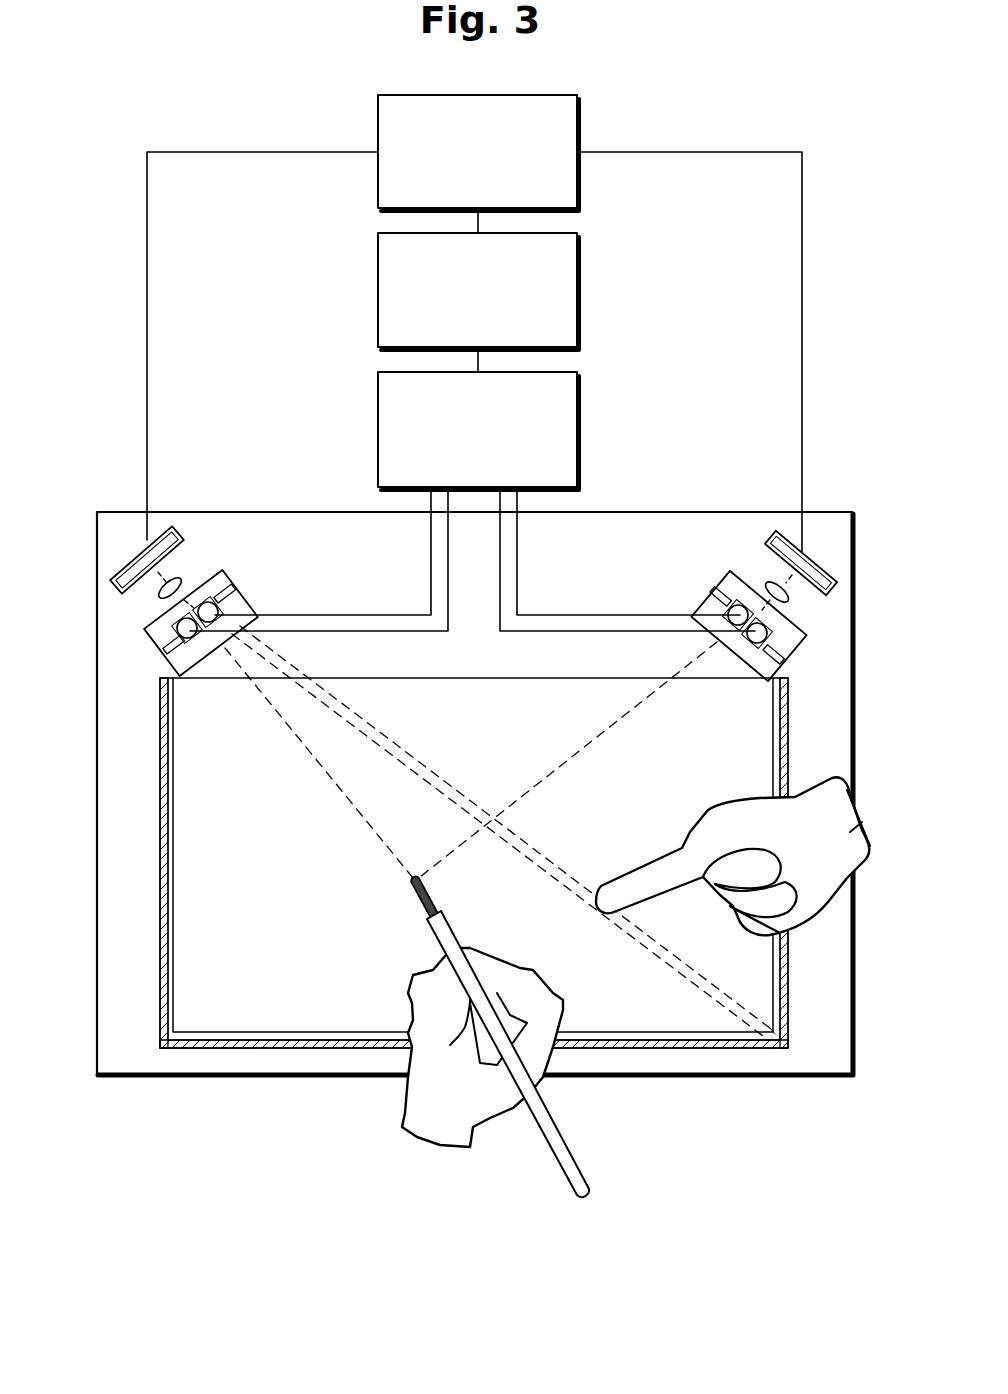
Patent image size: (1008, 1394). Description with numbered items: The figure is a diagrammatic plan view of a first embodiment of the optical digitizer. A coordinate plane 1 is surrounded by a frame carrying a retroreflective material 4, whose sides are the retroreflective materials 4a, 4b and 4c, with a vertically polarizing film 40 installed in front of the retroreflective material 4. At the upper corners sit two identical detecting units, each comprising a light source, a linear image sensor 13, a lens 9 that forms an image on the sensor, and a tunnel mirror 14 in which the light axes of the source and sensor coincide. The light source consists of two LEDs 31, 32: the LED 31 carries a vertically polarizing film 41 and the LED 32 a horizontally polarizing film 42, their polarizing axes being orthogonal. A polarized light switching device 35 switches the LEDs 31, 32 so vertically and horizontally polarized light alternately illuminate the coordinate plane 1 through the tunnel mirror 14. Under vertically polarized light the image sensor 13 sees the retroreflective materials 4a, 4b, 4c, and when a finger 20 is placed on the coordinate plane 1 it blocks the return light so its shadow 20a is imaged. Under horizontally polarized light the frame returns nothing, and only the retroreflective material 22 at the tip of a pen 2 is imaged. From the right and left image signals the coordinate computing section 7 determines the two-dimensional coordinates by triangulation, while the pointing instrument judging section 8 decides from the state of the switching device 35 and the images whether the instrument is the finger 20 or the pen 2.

The coordinate plane 1 is at (190, 982).
The pen 2 is at (560, 1170).
The retroreflective material 4 is at (712, 1048).
The retroreflective material 4a is at (160, 890).
The retroreflective material 4b is at (346, 1048).
The retroreflective material 4c is at (790, 945).
The coordinate computing section 7 is at (578, 180).
The pointing instrument judging section 8 is at (578, 295).
The lens 9 is at (178, 580).
The linear image sensor 13 is at (118, 566).
The tunnel mirror 14 is at (231, 584).
The finger 20 is at (858, 828).
The shadow 20a is at (785, 1015).
The retroreflective material 22 is at (405, 895).
The LED 31 is at (221, 609).
The LED 32 is at (178, 652).
The polarized light switching device 35 is at (578, 433).
The vertically polarizing film 40 is at (670, 1048).
The vertically polarizing film 41 is at (210, 598).
The horizontally polarizing film 42 is at (162, 615).